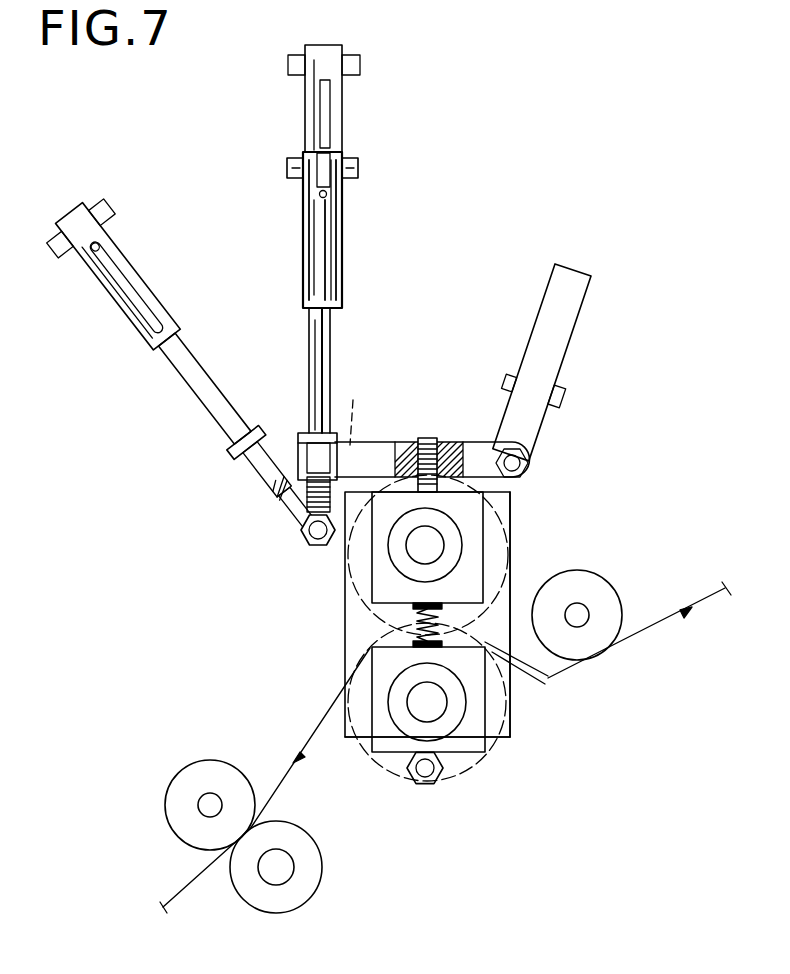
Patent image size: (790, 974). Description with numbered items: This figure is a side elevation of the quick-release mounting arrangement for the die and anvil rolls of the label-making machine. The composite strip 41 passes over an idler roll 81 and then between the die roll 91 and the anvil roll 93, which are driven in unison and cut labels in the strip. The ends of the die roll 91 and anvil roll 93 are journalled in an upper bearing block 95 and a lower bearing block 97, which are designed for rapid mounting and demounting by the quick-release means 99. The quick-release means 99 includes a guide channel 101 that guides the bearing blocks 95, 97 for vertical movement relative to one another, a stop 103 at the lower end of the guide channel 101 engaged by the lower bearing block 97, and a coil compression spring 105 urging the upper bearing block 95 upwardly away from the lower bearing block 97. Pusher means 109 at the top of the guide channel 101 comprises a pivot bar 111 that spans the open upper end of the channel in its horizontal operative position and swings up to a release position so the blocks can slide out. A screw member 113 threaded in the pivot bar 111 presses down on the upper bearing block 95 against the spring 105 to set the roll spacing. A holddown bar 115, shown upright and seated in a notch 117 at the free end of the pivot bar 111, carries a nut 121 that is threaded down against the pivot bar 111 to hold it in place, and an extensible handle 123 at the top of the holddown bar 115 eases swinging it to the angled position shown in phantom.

The composite strip 41 is at (650, 632).
The idler roll 81 is at (612, 586).
The die roll 91 is at (513, 503).
The anvil roll 93 is at (510, 668).
The upper bearing block 95 is at (483, 572).
The lower bearing block 97 is at (392, 740).
The quick-release means 99 is at (388, 347).
The guide channel 101 is at (512, 732).
The stop 103 is at (430, 790).
The coil compression spring 105 is at (510, 649).
The pusher means 109 is at (412, 378).
The pivot bar 111 is at (495, 447).
The screw member 113 is at (422, 438).
The holddown bar 115 is at (335, 335).
The notch 117 is at (363, 407).
The nut 121 is at (297, 433).
The extensible handle 123 is at (347, 246).